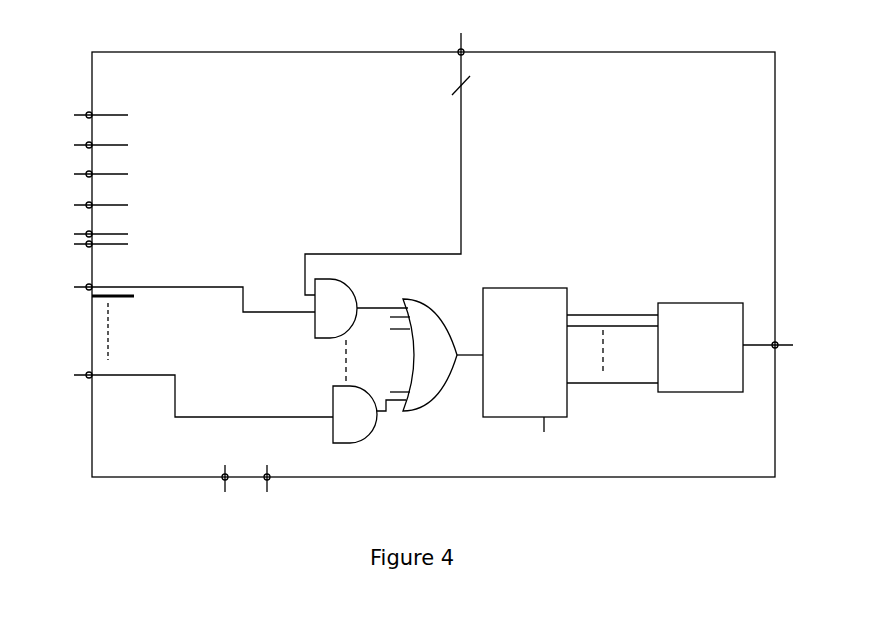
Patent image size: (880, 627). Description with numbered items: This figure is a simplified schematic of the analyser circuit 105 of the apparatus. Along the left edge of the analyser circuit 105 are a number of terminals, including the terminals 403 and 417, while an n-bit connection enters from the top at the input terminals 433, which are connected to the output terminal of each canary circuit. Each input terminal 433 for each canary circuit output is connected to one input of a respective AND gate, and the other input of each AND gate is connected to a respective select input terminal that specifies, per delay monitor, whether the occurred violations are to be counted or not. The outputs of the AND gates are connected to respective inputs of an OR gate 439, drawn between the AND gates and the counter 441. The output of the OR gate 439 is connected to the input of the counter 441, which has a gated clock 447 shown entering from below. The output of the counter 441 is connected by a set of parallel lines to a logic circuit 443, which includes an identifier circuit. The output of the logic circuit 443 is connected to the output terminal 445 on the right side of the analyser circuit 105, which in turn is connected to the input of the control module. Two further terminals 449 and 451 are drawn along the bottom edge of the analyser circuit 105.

The input pin 403 is at (87, 112).
The input pin 417 is at (87, 142).
The analyser circuit 105 is at (84, 266).
The input terminal 433 is at (463, 51).
The OR gate 439 is at (420, 302).
The counter 441 is at (522, 288).
The logic circuit 443 is at (683, 303).
The output terminal 445 is at (777, 344).
The gated clock 447 is at (546, 433).
The pin 449 is at (222, 481).
The pin 451 is at (269, 481).